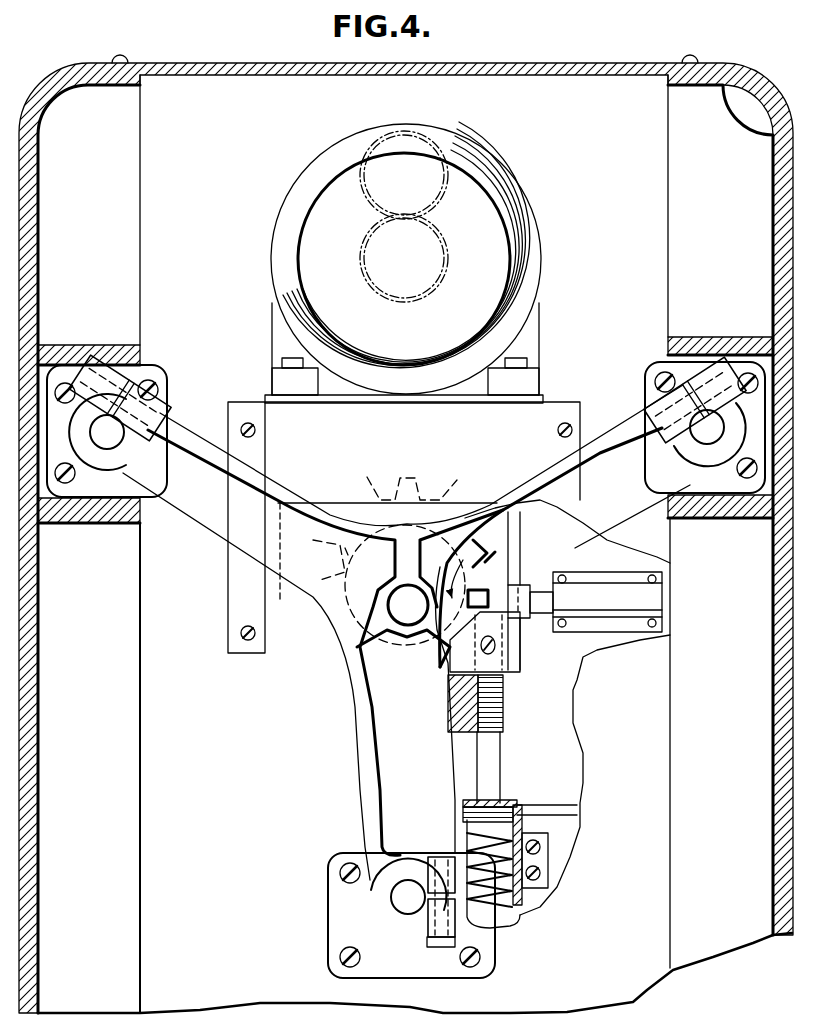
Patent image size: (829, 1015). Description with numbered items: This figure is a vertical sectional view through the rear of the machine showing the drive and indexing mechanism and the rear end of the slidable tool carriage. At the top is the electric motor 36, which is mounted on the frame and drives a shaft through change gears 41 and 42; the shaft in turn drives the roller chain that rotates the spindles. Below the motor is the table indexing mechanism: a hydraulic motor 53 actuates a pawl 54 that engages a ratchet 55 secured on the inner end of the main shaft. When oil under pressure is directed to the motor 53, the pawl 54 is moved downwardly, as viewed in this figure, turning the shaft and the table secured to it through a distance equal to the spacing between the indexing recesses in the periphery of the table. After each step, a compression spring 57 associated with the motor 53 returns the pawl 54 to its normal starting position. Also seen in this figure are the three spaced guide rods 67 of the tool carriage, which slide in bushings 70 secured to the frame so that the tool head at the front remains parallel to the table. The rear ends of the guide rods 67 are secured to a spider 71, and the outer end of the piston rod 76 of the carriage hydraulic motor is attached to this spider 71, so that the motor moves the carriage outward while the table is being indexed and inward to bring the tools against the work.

The electric motor 36 is at (511, 190).
The change gear 41 is at (382, 298).
The change gear 42 is at (372, 200).
The hydraulic motor 53 is at (507, 797).
The pawl 54 is at (512, 558).
The ratchet 55 is at (507, 637).
The compression spring 57 is at (540, 907).
The guide rod 67 is at (113, 437).
The bushing 70 is at (97, 483).
The spider 71 is at (360, 793).
The piston rod 76 is at (390, 650).